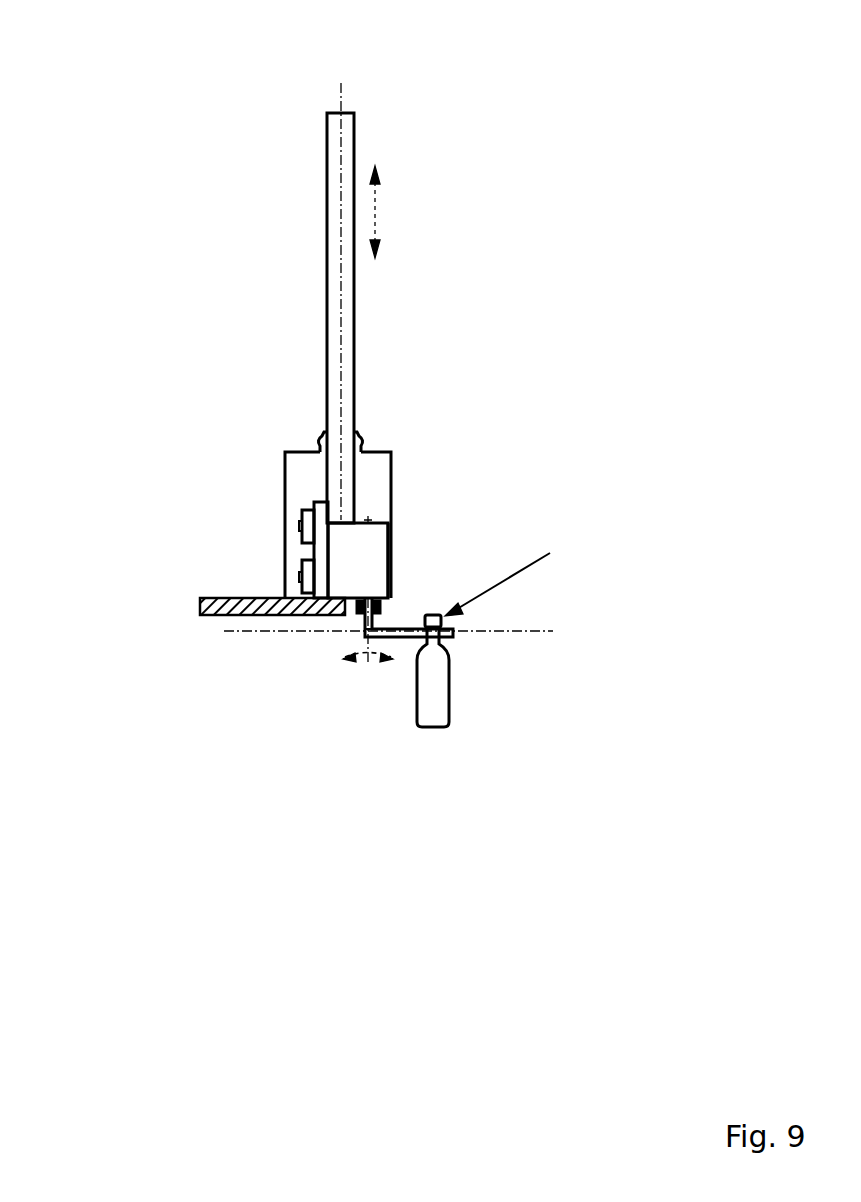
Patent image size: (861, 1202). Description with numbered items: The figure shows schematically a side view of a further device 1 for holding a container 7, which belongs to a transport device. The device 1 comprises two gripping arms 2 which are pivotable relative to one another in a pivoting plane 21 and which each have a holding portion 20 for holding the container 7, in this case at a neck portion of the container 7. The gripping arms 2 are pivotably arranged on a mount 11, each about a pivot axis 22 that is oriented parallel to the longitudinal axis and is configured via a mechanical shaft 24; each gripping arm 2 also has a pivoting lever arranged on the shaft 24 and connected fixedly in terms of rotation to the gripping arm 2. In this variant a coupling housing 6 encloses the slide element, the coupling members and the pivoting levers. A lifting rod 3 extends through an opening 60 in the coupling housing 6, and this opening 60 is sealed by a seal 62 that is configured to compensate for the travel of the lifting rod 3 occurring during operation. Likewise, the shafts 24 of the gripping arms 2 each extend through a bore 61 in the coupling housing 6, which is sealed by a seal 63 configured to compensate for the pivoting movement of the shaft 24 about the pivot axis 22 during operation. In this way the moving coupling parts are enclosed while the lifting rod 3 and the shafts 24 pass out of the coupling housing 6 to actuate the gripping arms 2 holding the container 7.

The device for holding a container 1 is at (158, 84).
The gripping arm 2 is at (433, 600).
The lifting rod 3 is at (338, 256).
The coupling housing 6 is at (371, 467).
The container 7 is at (444, 697).
The mount 11 is at (374, 545).
The holding portion 20 is at (512, 579).
The pivoting plane 21 is at (240, 632).
The pivot axis 22 is at (369, 663).
The shaft 24 is at (363, 622).
The opening 60 is at (325, 453).
The bore 61 is at (392, 592).
The seal 62 is at (324, 436).
The seal 63 is at (356, 612).